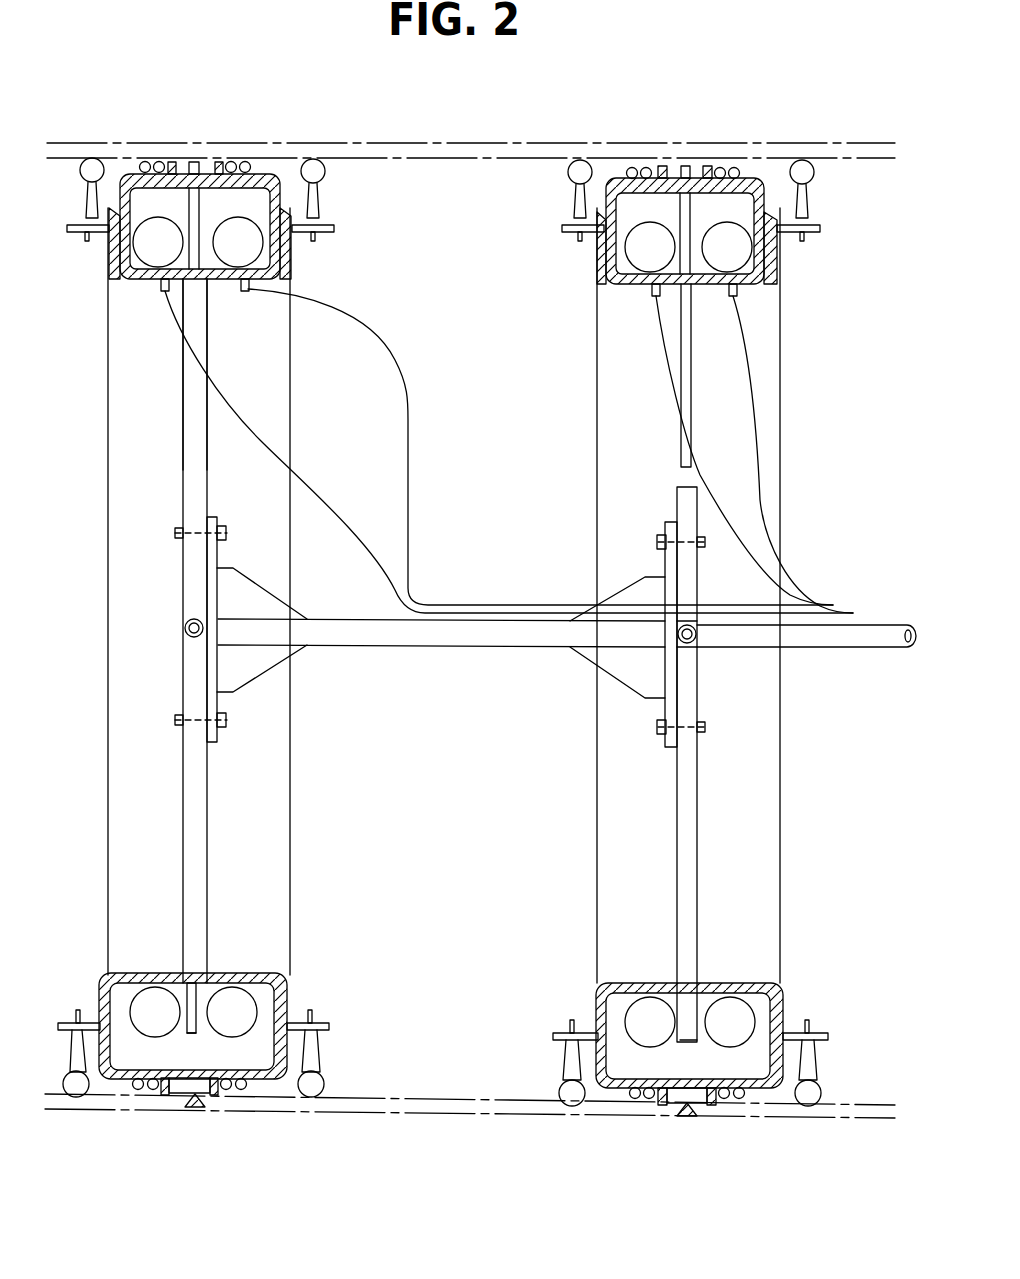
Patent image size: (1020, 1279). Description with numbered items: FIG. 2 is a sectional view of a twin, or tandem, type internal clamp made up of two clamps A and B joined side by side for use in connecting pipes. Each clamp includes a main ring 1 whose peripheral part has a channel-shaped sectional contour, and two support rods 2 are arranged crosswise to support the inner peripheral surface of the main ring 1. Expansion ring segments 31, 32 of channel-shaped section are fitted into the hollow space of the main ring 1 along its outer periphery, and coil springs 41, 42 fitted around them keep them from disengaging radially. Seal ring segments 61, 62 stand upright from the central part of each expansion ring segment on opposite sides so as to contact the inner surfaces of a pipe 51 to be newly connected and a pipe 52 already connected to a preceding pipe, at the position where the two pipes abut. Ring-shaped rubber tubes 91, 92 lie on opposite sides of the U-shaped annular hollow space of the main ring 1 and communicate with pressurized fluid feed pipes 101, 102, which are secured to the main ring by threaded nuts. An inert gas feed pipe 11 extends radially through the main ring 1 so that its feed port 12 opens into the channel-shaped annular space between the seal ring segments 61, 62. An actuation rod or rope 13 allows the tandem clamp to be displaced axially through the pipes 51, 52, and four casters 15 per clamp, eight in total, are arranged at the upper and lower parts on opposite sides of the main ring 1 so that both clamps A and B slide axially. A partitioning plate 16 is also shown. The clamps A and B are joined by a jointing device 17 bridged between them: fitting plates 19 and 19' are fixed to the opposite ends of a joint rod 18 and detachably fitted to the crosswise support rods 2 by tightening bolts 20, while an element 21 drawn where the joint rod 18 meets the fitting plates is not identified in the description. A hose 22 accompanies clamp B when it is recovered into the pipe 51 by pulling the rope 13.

The main ring 1 is at (118, 272).
The support rod 2 is at (183, 604).
The expansion ring segment 31 is at (279, 180).
The expansion ring segment 32 is at (284, 993).
The coil spring 41 is at (246, 161).
The coil spring 42 is at (145, 161).
The pipe to be newly connected 51 is at (508, 150).
The pipe already connected 52 is at (90, 158).
The seal ring segment 61 is at (220, 162).
The seal ring segment 62 is at (172, 162).
The rubber tube 91 is at (256, 249).
The rubber tube 92 is at (140, 249).
The pressurized fluid feed pipe 101 is at (246, 293).
The pressurized fluid feed pipe 102 is at (165, 293).
The inert gas feed pipe 11 is at (243, 291).
The feed port 12 is at (199, 166).
The actuation rod or rope 13 is at (866, 632).
The caster 15 is at (86, 173).
The partitioning plate 16 is at (193, 1032).
The jointing device 17 is at (545, 620).
The joint rod 18 is at (462, 632).
The fitting plate 19 is at (650, 600).
The fitting plate 19' is at (242, 607).
The bolt 20 is at (227, 534).
The gusset 21 is at (282, 604).
The hose 22 is at (412, 425).
The clamp A is at (796, 376).
The clamp B is at (312, 408).